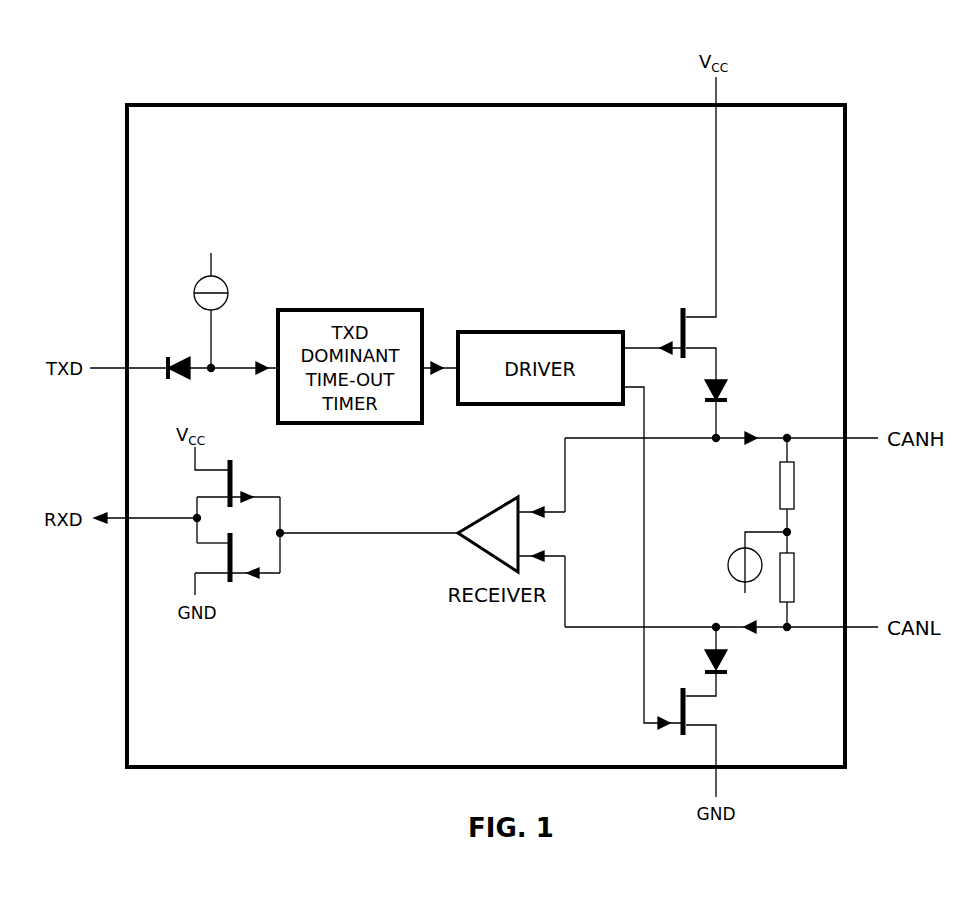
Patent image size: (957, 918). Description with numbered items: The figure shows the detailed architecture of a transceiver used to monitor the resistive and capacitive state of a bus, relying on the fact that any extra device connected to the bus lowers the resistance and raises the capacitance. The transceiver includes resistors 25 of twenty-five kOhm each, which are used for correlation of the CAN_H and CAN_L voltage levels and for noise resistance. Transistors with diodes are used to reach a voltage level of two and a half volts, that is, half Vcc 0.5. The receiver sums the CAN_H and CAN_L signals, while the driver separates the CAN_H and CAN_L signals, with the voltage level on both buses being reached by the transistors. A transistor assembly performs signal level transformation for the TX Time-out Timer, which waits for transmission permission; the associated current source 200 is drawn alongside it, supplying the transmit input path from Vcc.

The 200 µA current source 200 is at (183, 312).
The resistor 25 is at (803, 534).
The Vcc voltage level 0.5 is at (719, 575).